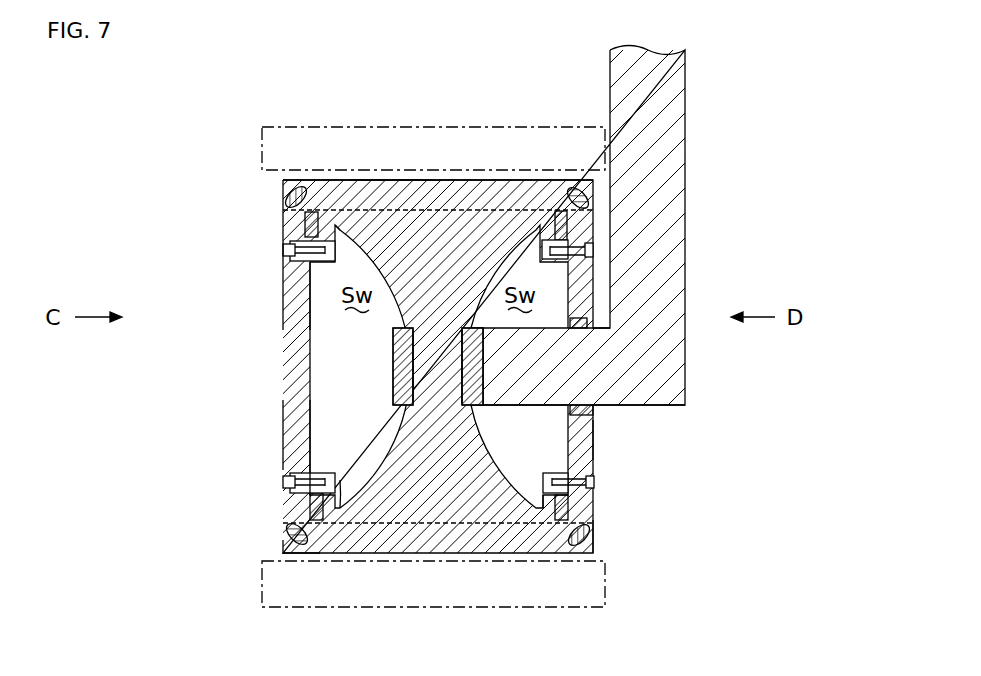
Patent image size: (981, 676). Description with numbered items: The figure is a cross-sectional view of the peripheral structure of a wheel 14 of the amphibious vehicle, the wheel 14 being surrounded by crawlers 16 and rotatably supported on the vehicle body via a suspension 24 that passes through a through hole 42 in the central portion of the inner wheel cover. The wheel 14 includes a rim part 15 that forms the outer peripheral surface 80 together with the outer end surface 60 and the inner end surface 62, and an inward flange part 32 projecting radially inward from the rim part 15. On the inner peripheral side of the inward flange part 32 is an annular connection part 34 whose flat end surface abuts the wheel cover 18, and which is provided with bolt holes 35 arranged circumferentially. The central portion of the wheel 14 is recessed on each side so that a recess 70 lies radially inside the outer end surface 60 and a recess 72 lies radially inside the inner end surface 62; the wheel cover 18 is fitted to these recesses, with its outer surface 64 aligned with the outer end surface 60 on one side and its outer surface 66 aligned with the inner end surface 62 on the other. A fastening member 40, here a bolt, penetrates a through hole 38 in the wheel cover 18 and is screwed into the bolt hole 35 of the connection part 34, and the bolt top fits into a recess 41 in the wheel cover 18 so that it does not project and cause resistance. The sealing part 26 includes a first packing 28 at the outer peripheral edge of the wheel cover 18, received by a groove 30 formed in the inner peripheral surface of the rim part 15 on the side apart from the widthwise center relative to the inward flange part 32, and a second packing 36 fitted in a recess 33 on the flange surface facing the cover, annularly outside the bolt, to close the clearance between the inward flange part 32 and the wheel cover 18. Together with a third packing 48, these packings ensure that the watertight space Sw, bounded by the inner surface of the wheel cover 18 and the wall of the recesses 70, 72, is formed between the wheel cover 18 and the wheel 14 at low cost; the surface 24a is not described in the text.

The wheel 14 is at (437, 181).
The rim part 15 is at (390, 182).
The crawlers 16 is at (465, 127).
The wheel cover 18 is at (283, 398).
The suspension 24 is at (688, 228).
The bore surface 24a is at (352, 505).
The sealing part 26 is at (285, 218).
The first packing 28 is at (290, 532).
The groove 30 is at (560, 214).
The inward flange part 32 is at (350, 225).
The recess 33 is at (287, 236).
The connection part 34 is at (333, 262).
The bolt holes 35 is at (312, 472).
The second packing 36 is at (320, 232).
The through holes 38 is at (283, 267).
The fastening member 40 is at (284, 251).
The recess 41 is at (283, 481).
The through hole 42 is at (578, 403).
The third packing 48 is at (598, 413).
The outer end surface 60 is at (285, 548).
The inner end surface 62 is at (593, 545).
The outer surface 64 is at (283, 447).
The outer surface 66 is at (595, 430).
The recess 70 is at (388, 400).
The recess 72 is at (540, 505).
The outer peripheral surface 80 is at (420, 500).